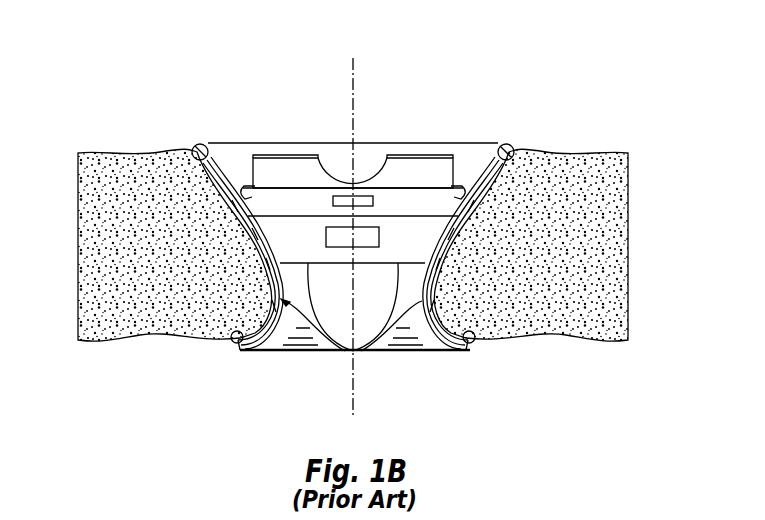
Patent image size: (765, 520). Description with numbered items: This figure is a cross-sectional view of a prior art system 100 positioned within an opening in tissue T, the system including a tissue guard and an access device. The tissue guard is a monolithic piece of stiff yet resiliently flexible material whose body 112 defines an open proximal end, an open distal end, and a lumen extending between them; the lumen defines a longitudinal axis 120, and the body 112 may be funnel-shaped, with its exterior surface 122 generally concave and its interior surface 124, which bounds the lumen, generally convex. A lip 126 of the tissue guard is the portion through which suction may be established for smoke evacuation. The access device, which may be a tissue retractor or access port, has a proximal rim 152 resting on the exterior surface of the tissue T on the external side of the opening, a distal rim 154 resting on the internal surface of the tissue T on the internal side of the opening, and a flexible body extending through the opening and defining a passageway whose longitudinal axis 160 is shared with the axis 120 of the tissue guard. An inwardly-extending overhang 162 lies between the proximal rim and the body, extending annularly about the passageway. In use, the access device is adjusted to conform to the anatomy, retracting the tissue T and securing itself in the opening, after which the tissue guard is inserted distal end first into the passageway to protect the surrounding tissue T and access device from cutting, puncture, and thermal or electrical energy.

The prior art system 100 is at (510, 97).
The body 112 is at (440, 279).
The longitudinal axis 120 is at (438, 232).
The exterior surface 122 is at (280, 329).
The interior surface 124 is at (300, 260).
The lip 126 is at (322, 201).
The proximal rim 152 is at (508, 148).
The distal rim 154 is at (233, 343).
The longitudinal axis 160 is at (350, 65).
The inwardly-extending overhang 162 is at (506, 168).
The tissue T is at (465, 289).